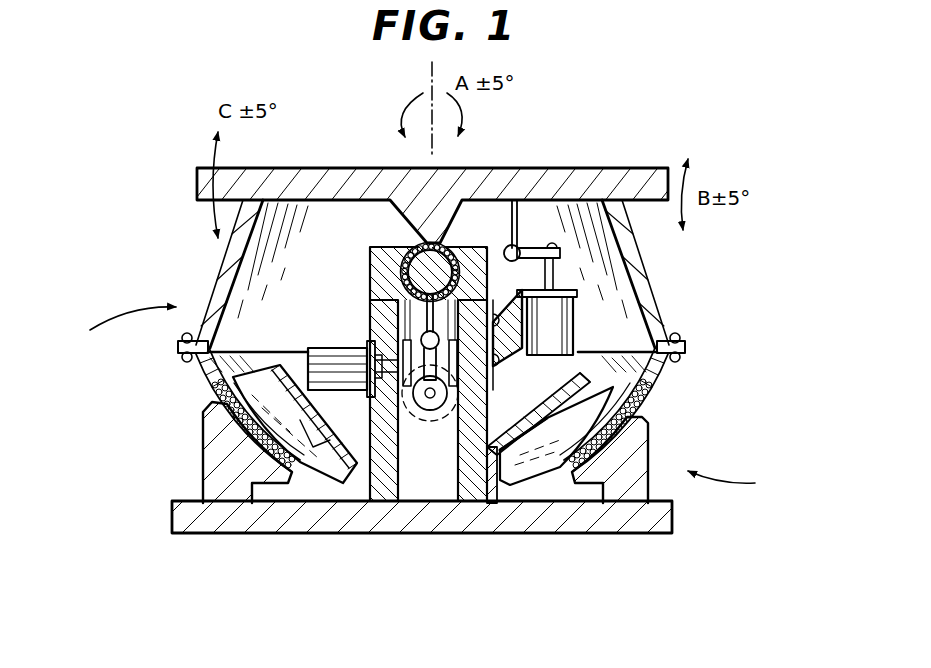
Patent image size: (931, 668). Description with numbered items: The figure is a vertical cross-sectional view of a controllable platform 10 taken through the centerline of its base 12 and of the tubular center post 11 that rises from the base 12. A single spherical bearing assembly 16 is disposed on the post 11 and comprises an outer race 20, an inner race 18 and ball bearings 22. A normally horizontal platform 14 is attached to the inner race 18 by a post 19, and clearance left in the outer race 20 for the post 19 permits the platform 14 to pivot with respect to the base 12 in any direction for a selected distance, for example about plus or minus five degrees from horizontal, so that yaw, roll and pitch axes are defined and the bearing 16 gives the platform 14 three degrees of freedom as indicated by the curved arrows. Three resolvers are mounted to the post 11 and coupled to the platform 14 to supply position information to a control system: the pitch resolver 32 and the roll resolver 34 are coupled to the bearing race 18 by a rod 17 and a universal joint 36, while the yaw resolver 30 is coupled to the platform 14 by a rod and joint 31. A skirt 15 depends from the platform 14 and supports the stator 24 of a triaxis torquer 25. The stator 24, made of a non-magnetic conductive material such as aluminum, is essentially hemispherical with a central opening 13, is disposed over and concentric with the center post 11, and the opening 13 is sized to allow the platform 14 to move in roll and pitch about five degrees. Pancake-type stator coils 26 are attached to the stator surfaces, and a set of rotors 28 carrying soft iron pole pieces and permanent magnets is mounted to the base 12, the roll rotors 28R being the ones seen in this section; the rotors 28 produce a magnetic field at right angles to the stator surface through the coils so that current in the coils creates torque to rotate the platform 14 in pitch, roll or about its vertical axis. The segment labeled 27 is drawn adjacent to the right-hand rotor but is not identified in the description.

The controllable platform 10 is at (118, 334).
The tubular center post 11 is at (377, 320).
The base 12 is at (425, 522).
The central opening 13 is at (506, 487).
The platform 14 is at (341, 170).
The skirt 15 is at (644, 308).
The spherical bearing assembly 16 is at (465, 334).
The rod 17 is at (425, 346).
The inner race 18 is at (441, 255).
The post 19 is at (428, 246).
The outer race 20 is at (368, 262).
The ball bearings 22 is at (459, 266).
The stator 24 is at (286, 350).
The triaxis torquer 25 is at (735, 484).
The stator coils 26 is at (219, 398).
The curved guide segment 27 is at (552, 395).
The rotors 28 is at (262, 416).
The roll rotors 28R is at (203, 438).
The yaw resolver 30 is at (573, 318).
The rod and joint 31 is at (519, 222).
The pitch resolver 32 is at (347, 348).
The roll resolver 34 is at (437, 423).
The universal joint 36 is at (453, 360).